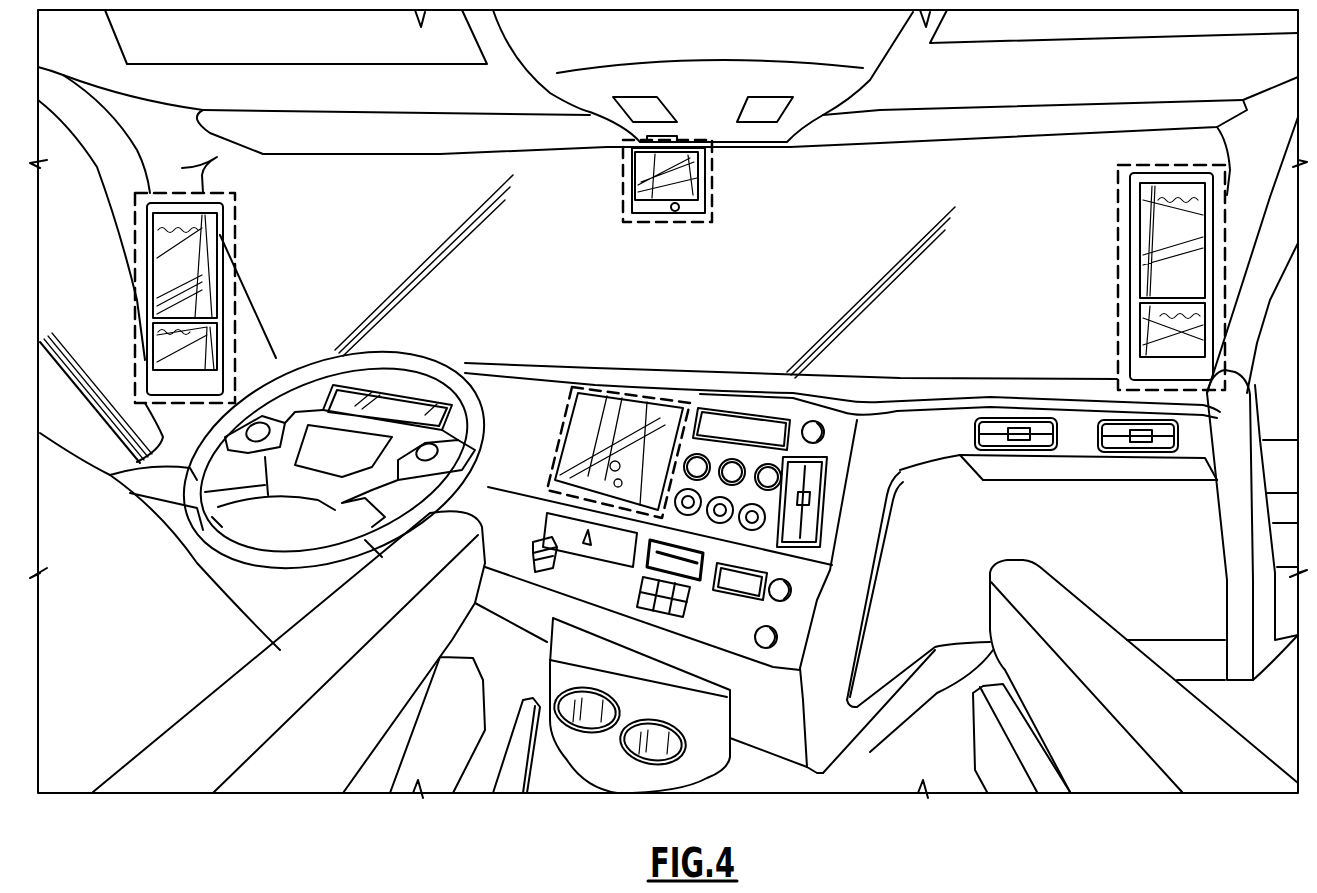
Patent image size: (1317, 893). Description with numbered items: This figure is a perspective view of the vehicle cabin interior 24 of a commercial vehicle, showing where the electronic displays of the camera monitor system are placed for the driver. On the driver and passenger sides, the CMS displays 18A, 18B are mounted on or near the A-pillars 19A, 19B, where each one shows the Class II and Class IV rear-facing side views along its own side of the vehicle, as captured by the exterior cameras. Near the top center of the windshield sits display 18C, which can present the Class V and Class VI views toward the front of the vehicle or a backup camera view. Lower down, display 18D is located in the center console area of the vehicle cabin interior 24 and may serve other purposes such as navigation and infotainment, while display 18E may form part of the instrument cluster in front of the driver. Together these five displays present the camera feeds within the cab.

The CMS display 18A is at (244, 235).
The CMS display 18B is at (1093, 231).
The display 18C is at (633, 173).
The display 18D is at (653, 413).
The display 18E is at (410, 407).
The A-pillar 19A is at (217, 157).
The A-pillar 19B is at (1257, 150).
The vehicle cabin interior 24 is at (893, 805).